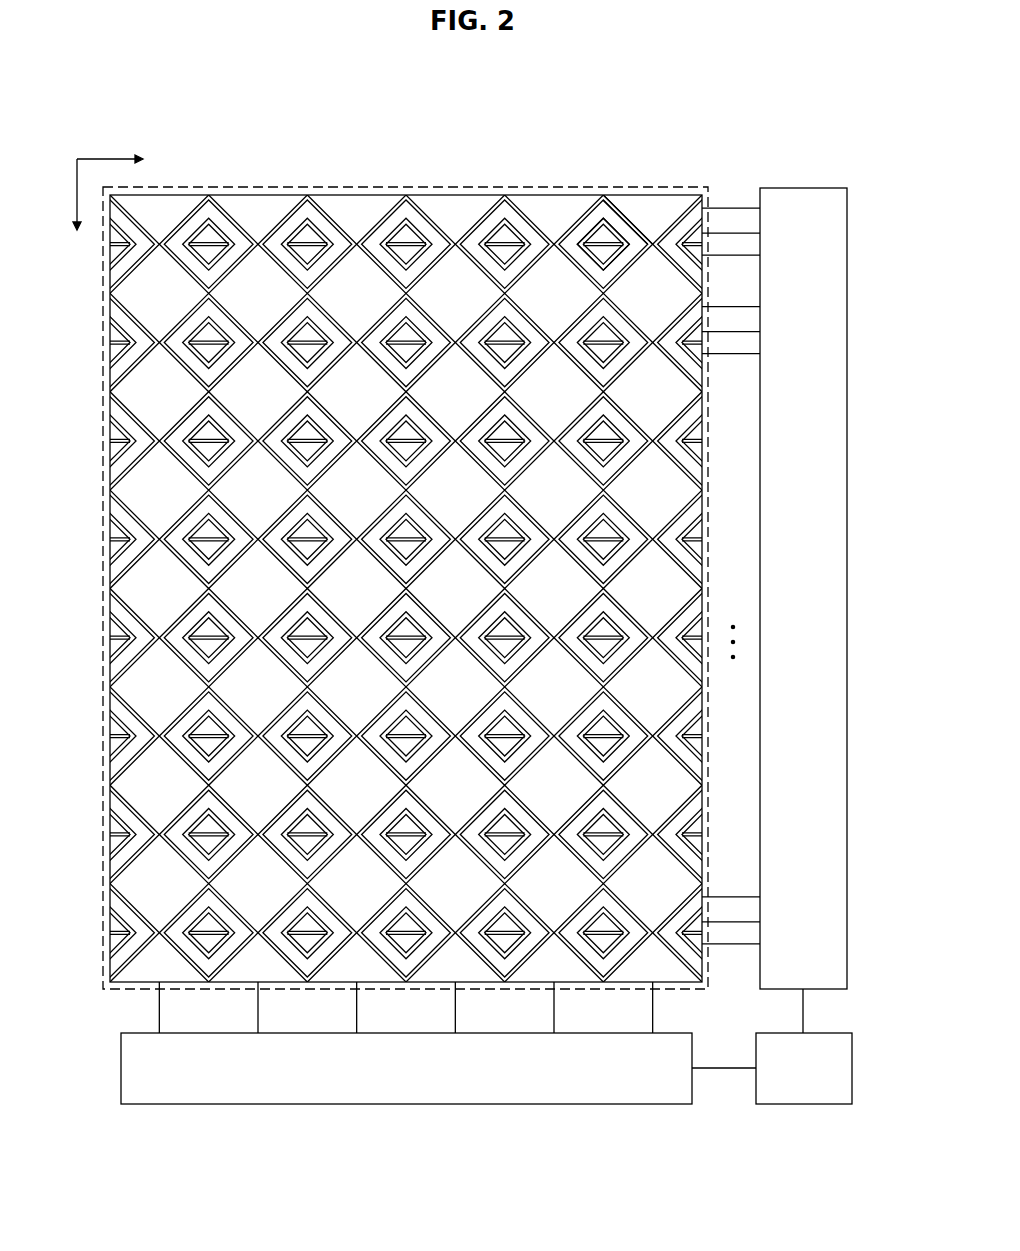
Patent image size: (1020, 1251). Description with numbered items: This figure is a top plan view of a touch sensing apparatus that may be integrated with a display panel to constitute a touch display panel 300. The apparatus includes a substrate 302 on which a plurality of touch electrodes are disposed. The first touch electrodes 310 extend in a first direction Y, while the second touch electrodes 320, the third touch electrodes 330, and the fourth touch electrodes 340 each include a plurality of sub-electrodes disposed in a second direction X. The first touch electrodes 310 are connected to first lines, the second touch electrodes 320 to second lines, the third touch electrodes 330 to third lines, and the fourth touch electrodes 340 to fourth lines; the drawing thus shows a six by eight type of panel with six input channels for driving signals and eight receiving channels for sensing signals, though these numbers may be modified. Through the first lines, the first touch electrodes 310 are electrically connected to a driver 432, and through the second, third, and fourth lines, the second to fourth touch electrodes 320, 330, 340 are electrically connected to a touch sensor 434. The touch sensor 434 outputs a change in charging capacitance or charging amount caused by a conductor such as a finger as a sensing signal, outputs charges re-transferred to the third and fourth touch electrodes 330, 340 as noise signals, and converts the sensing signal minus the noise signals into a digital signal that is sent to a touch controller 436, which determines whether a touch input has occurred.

The touch display panel 300 is at (442, 104).
The substrate 302 is at (240, 190).
The first touch electrodes 310 is at (655, 200).
The second touch electrodes 320 is at (615, 215).
The third touch electrodes 330 is at (599, 235).
The fourth touch electrodes 340 is at (582, 240).
The driver 432 is at (407, 1106).
The touch sensor 434 is at (801, 188).
The touch controller 436 is at (806, 1105).